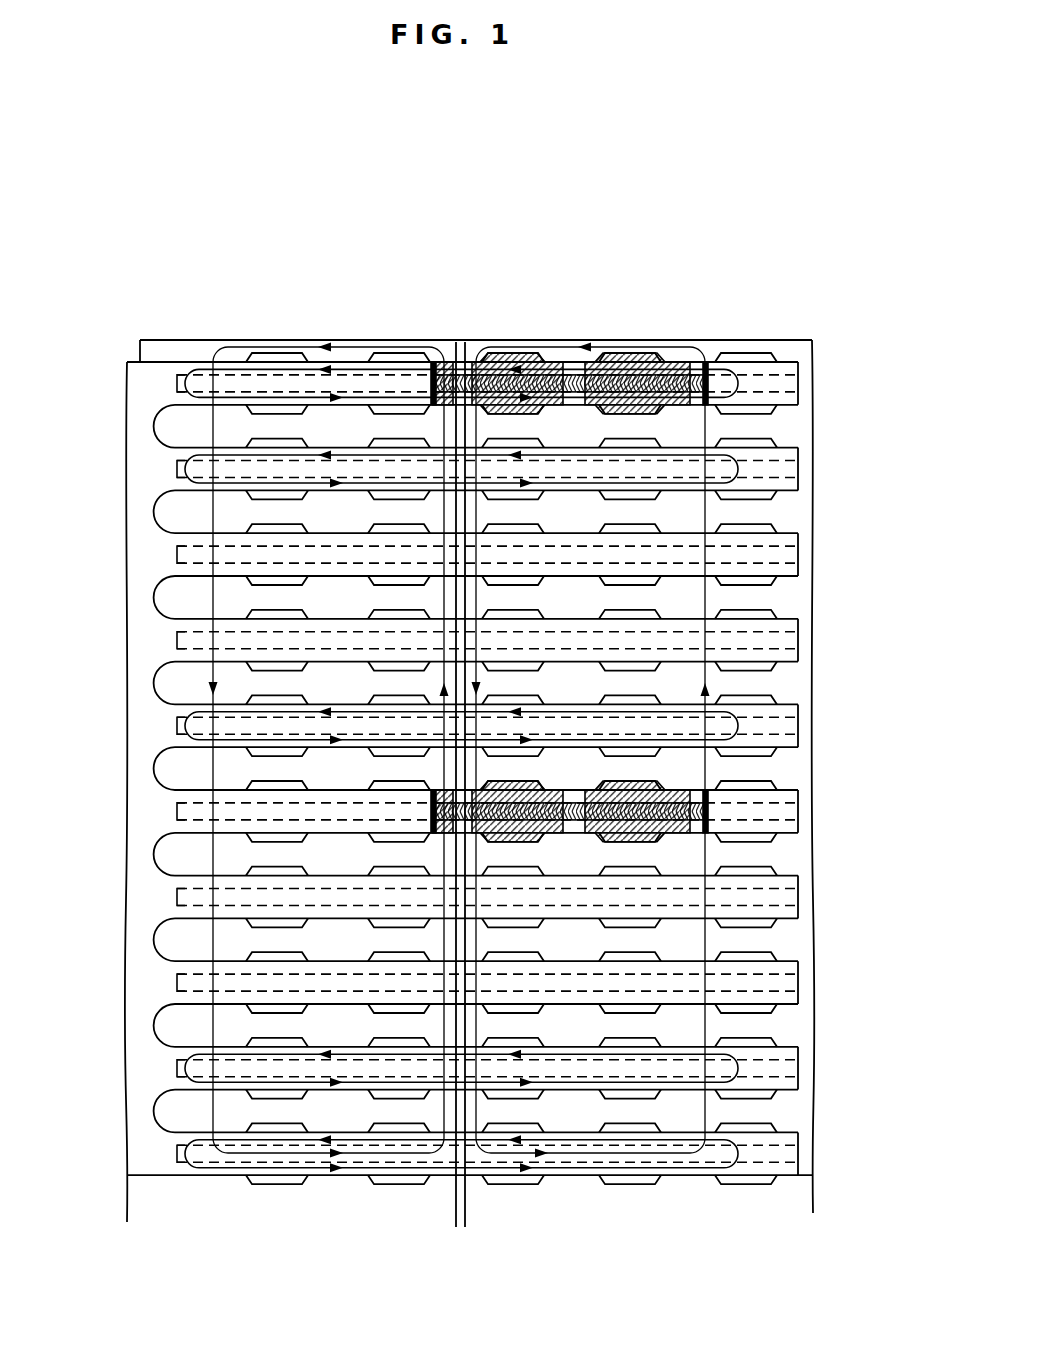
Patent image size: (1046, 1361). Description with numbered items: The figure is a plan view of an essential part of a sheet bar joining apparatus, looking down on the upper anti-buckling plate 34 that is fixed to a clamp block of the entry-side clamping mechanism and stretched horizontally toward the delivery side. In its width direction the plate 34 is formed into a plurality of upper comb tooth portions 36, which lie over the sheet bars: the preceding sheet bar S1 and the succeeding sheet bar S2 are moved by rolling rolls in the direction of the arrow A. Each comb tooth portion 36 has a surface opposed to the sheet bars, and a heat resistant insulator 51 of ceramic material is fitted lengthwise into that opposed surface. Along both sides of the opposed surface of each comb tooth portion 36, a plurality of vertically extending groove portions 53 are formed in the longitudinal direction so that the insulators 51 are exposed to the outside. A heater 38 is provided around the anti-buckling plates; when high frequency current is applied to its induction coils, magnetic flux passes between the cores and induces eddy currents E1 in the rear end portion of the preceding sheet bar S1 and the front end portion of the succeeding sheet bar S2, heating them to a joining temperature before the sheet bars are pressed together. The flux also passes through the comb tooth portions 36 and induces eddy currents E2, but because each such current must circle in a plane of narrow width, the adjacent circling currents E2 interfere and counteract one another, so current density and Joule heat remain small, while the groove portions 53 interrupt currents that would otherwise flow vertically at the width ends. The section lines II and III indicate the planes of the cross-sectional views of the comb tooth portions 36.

The upper anti-buckling plate 34 is at (162, 352).
The upper comb tooth portions 36 is at (765, 357).
The heater 38 is at (623, 303).
The heat resistant insulator 51 is at (576, 350).
The groove portions 53 is at (256, 352).
The eddy currents E1 is at (213, 510).
The eddy currents E2 is at (200, 365).
The preceding sheet bar S1 is at (728, 347).
The succeeding sheet bar S2 is at (240, 360).
The arrow A is at (160, 1197).
The section line II is at (90, 1113).
The section line III is at (802, 277).